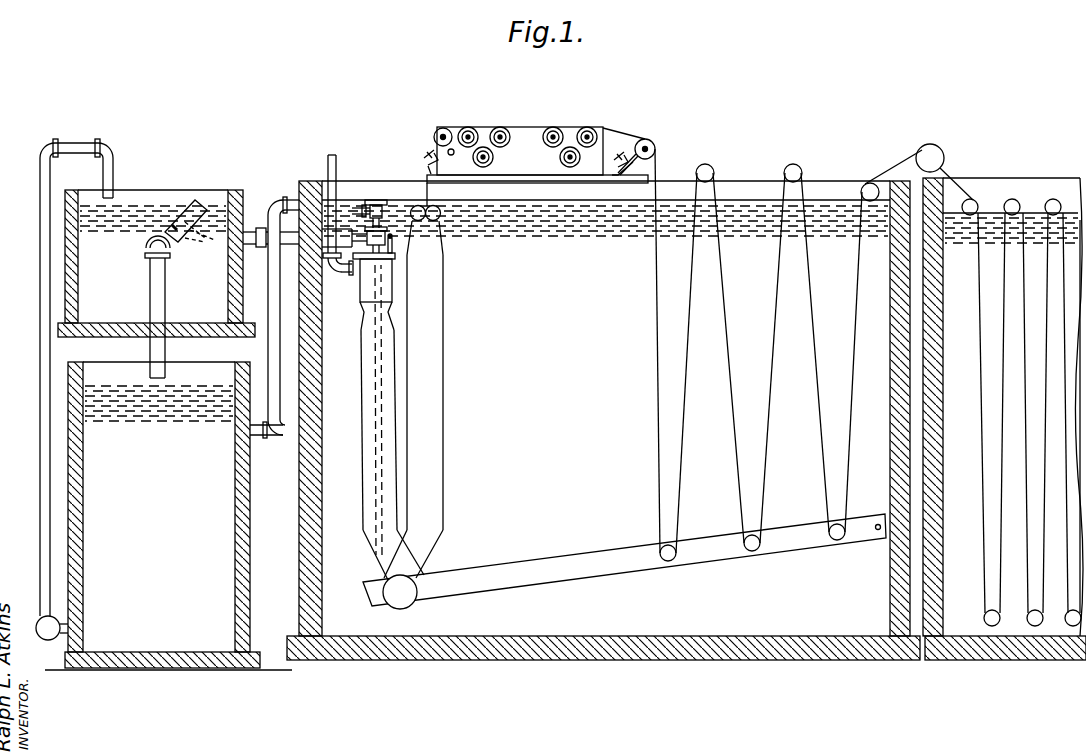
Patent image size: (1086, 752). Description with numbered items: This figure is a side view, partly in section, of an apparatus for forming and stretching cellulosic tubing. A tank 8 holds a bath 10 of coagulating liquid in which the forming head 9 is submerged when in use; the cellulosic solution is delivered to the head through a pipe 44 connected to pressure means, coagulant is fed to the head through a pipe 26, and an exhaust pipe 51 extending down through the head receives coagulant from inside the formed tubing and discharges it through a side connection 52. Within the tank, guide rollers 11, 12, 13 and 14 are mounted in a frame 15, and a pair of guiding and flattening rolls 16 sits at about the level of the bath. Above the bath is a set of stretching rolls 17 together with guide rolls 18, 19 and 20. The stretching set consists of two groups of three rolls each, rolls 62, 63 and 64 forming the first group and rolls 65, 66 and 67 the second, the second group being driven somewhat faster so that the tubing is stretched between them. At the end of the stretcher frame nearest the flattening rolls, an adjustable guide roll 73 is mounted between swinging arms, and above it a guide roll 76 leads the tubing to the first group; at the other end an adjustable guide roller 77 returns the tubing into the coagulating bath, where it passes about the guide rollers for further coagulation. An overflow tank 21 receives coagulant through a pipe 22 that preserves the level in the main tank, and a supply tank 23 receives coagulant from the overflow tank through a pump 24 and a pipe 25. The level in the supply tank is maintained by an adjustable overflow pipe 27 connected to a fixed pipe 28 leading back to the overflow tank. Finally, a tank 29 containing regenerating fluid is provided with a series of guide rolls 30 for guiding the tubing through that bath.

The tank 8 is at (695, 660).
The forming head 9 is at (360, 293).
The bath of coagulating liquid 10 is at (668, 210).
The guide roller 11 is at (403, 603).
The guide roller 12 is at (668, 562).
The guide roller 13 is at (752, 552).
The guide roller 14 is at (837, 541).
The frame 15 is at (590, 568).
The guiding and flattening rolls 16 is at (416, 205).
The set of stretching rolls 17 is at (520, 140).
The guide roll 18 is at (710, 168).
The guide roll 19 is at (796, 168).
The guide roll 20 is at (870, 183).
The overflow tank 21 is at (172, 664).
The pipe 22 is at (277, 200).
The supply tank 23 is at (145, 190).
The pump 24 is at (48, 632).
The pipe 25 is at (78, 133).
The pipe 26 is at (250, 230).
The adjustable overflow pipe 27 is at (188, 205).
The fixed pipe 28 is at (150, 292).
The tank containing regenerating fluid 29 is at (963, 661).
The guide rolls 30 is at (1050, 200).
The pipe 44 is at (331, 158).
The exhaust pipe 51 is at (375, 418).
The side connection 52 is at (370, 203).
The stretching roll 62 is at (468, 127).
The stretching roll 63 is at (493, 158).
The stretching roll 64 is at (500, 127).
The stretching roll 65 is at (553, 127).
The stretching roll 66 is at (560, 158).
The stretching roll 67 is at (587, 127).
The guide roll 73 is at (426, 164).
The guide roll 76 is at (438, 130).
The guide roller 77 is at (645, 139).